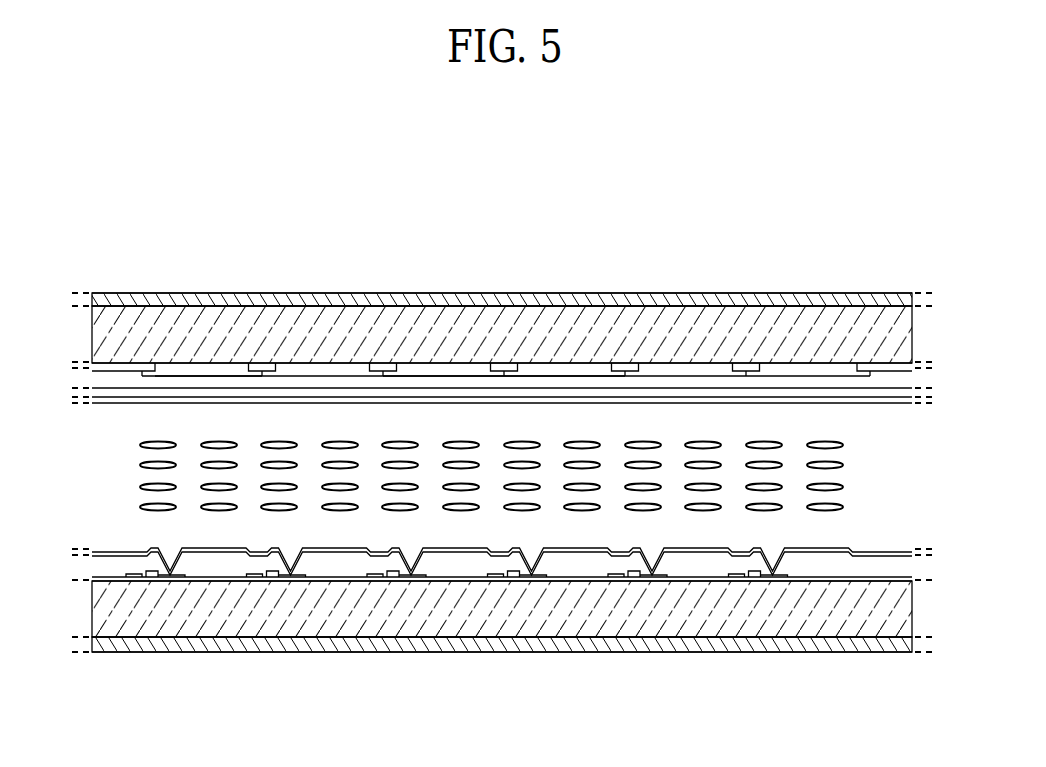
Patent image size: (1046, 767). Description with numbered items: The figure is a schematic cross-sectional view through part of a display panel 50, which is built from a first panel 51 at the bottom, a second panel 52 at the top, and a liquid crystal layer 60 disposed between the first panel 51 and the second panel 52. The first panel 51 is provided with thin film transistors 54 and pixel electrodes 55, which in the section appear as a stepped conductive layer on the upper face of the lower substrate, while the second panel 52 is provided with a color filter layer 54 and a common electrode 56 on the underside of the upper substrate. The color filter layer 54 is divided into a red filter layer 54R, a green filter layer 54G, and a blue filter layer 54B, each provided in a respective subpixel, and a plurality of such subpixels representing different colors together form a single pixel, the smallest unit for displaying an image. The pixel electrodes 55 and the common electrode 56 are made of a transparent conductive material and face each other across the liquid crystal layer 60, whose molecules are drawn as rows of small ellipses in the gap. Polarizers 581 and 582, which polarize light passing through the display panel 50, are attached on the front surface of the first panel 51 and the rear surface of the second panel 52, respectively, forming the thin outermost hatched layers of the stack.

The display panel 50 is at (527, 158).
The first panel 51 is at (502, 645).
The second panel 52 is at (502, 315).
The color filter layer 54 is at (502, 453).
The red filter layer 54R is at (316, 376).
The green filter layer 54G is at (441, 376).
The blue filter layer 54B is at (564, 308).
The pixel electrodes 55 is at (447, 556).
The common electrode 56 is at (697, 398).
The liquid crystal layer 60 is at (868, 477).
The polarizer 581 is at (650, 641).
The polarizer 582 is at (175, 300).